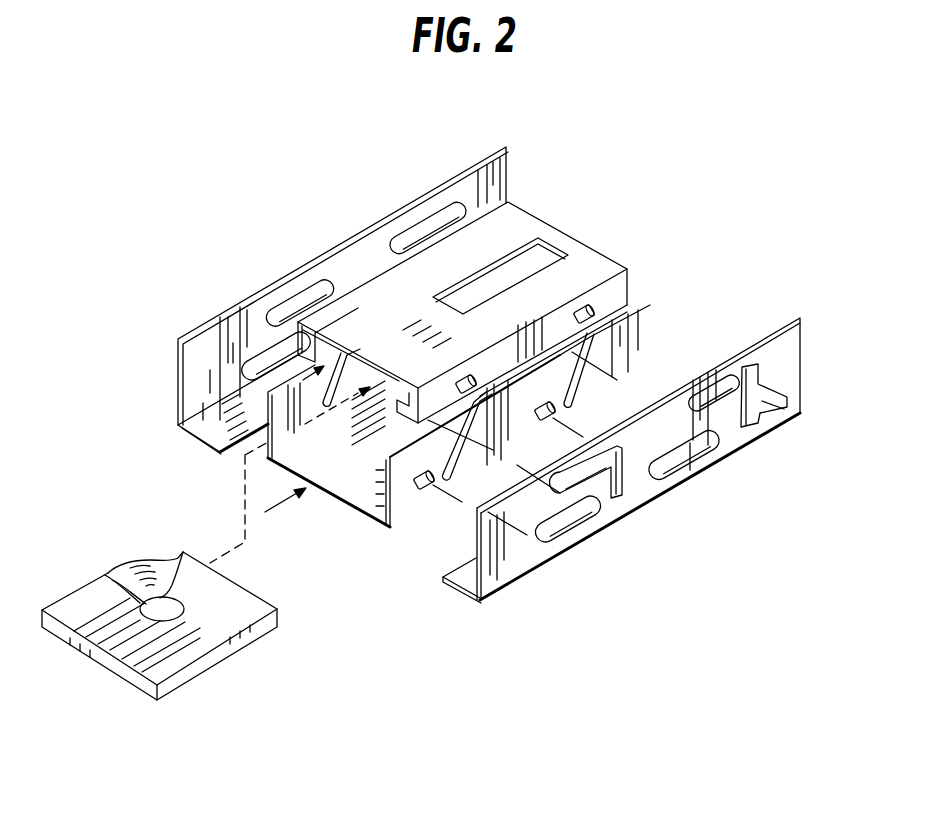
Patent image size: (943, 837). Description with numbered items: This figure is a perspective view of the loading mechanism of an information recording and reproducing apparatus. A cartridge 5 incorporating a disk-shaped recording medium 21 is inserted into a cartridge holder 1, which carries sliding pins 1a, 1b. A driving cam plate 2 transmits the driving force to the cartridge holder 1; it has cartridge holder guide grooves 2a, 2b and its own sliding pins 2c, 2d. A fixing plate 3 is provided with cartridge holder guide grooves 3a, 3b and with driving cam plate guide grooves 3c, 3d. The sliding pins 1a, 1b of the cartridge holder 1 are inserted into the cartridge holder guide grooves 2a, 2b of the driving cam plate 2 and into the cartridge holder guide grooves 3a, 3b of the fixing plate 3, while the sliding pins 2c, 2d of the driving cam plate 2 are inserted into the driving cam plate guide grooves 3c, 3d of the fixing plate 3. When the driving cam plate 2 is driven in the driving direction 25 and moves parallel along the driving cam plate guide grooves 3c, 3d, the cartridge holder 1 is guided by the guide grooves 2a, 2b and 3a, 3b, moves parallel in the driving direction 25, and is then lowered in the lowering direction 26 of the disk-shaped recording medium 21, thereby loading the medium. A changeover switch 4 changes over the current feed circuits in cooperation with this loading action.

The cartridge holder 1 is at (507, 227).
The sliding pin 1a is at (463, 382).
The sliding pin 1b is at (584, 310).
The driving cam plate 2 is at (640, 323).
The cartridge holder guide groove 2a is at (593, 382).
The cartridge holder guide groove 2b is at (450, 480).
The sliding pin 2c is at (535, 415).
The sliding pin 2d is at (420, 488).
The fixing plate 3 is at (500, 172).
The cartridge holder guide groove 3a is at (732, 388).
The cartridge holder guide groove 3b is at (620, 490).
The driving cam plate guide groove 3c is at (712, 458).
The driving cam plate guide groove 3d is at (560, 528).
The changeover switch 4 is at (767, 418).
The cartridge 5 is at (225, 615).
The disk-shaped recording medium 21 is at (128, 565).
The driving direction of the driving cam plate 25 is at (288, 497).
The lowering direction of the disk-shaped recording medium 26 is at (640, 275).